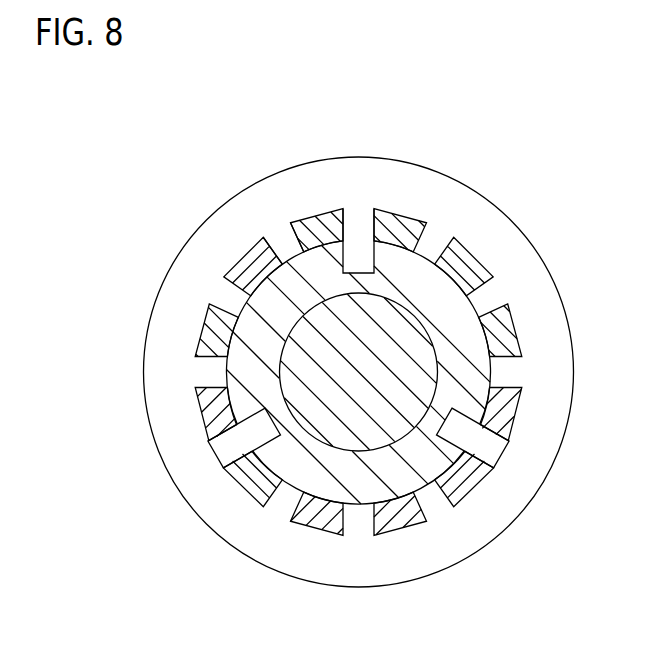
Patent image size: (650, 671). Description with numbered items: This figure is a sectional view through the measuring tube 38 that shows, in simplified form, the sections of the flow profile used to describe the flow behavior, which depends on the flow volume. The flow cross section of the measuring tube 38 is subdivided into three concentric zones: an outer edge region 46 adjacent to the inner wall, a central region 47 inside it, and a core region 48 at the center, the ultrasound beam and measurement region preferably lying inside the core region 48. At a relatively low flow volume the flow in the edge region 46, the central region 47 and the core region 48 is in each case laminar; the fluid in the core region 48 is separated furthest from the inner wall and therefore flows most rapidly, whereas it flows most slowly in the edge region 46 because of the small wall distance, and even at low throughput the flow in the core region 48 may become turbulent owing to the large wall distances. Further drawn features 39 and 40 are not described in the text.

The measuring tube 38 is at (522, 217).
The keyway slot 39 is at (356, 253).
The slot between pole segments 40 is at (282, 237).
The edge region 46 is at (397, 222).
The central region 47 is at (260, 302).
The core region 48 is at (322, 337).